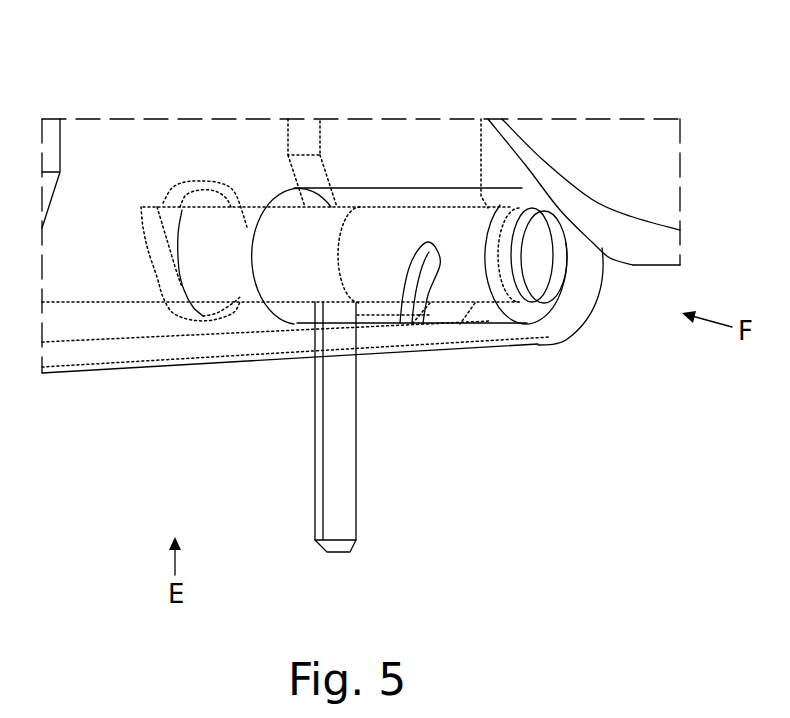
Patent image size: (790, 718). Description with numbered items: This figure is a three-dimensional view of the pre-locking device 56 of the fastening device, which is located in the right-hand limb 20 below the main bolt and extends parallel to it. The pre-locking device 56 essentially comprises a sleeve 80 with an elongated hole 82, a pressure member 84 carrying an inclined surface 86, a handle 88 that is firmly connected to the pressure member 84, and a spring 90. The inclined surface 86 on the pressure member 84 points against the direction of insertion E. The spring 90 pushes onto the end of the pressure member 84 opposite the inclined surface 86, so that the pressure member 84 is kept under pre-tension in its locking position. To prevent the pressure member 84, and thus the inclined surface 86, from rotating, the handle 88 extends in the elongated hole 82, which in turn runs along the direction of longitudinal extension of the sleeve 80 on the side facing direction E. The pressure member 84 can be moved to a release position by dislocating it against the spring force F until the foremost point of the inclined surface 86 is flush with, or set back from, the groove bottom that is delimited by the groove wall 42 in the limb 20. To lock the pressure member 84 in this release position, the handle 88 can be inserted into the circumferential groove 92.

The right-hand limb 20 is at (142, 322).
The groove wall 42 is at (90, 322).
The pre-locking device 56 is at (524, 421).
The sleeve 80 is at (479, 303).
The elongated hole 82 is at (378, 313).
The pressure member 84 is at (227, 227).
The inclined surface 86 is at (140, 233).
The handle 88 is at (320, 468).
The spring 90 is at (413, 227).
The circumferential groove 92 is at (403, 310).